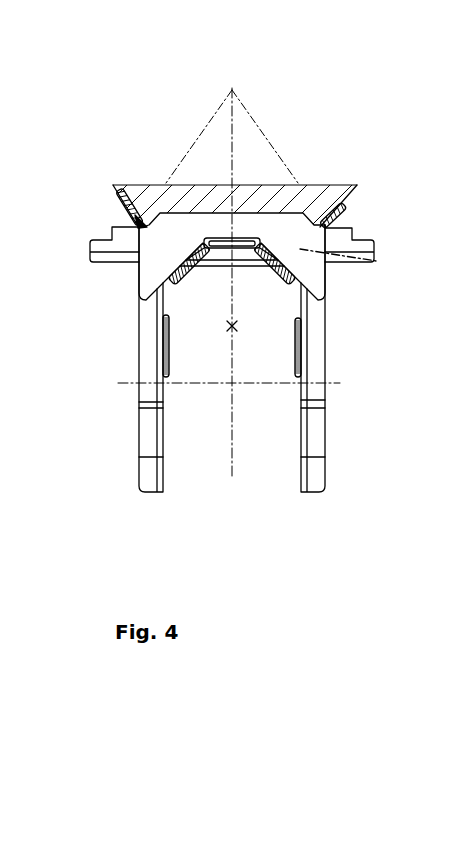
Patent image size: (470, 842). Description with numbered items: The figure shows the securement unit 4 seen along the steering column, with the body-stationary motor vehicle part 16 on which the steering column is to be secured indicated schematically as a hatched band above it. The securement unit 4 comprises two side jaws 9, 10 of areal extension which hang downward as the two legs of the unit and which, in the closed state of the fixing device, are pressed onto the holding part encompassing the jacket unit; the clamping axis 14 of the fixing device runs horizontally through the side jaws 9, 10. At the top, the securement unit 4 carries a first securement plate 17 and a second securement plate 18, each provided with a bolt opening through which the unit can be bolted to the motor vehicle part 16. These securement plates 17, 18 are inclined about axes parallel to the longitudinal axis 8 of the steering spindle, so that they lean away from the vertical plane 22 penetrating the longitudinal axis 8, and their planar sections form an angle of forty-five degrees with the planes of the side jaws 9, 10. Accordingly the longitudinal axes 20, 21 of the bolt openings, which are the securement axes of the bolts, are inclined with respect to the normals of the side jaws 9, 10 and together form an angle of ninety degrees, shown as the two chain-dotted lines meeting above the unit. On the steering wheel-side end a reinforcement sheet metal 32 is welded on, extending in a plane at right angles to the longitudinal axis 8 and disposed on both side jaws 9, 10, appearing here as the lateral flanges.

The securement unit 4 is at (122, 512).
The longitudinal axis of steering spindle 8 is at (240, 329).
The side jaw 9 is at (307, 368).
The side jaw 10 is at (165, 352).
The clamping axis 14 is at (282, 383).
The body-stationary motor vehicle part 16 is at (252, 195).
The first securement plate 17 is at (357, 185).
The second securement plate 18 is at (113, 185).
The longitudinal axis of bolt opening 20 is at (283, 168).
The longitudinal axis of bolt opening 21 is at (187, 162).
The vertical plane 22 is at (233, 465).
The reinforcement sheet metal 32 is at (378, 261).